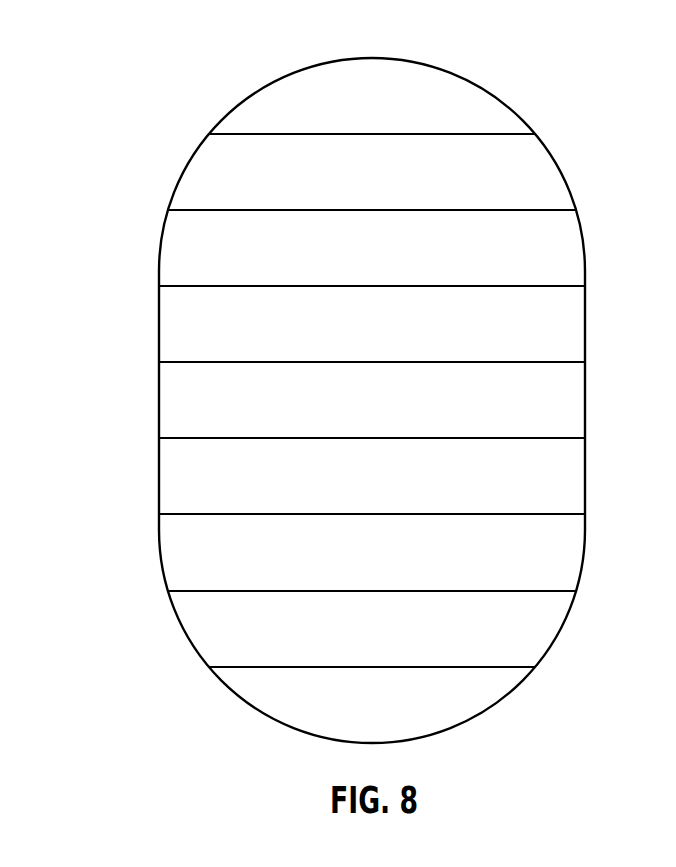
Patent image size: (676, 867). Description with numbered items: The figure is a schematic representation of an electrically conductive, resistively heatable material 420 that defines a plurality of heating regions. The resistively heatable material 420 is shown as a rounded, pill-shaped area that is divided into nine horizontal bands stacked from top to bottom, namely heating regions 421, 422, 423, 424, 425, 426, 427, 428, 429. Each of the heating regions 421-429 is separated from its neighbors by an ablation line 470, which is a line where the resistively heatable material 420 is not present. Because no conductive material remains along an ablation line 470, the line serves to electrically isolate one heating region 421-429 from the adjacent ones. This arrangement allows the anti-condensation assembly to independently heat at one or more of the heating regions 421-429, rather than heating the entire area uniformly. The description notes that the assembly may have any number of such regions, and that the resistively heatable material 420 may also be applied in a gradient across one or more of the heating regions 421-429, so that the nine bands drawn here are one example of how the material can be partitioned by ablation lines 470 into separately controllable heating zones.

The resistively heatable material 420 is at (503, 90).
The heating region 421 is at (354, 109).
The heating region 422 is at (354, 185).
The heating region 423 is at (354, 261).
The heating region 424 is at (354, 337).
The heating region 425 is at (354, 413).
The heating region 426 is at (354, 489).
The heating region 427 is at (354, 565).
The heating region 428 is at (354, 642).
The heating region 429 is at (354, 718).
The ablation line 470 is at (578, 591).